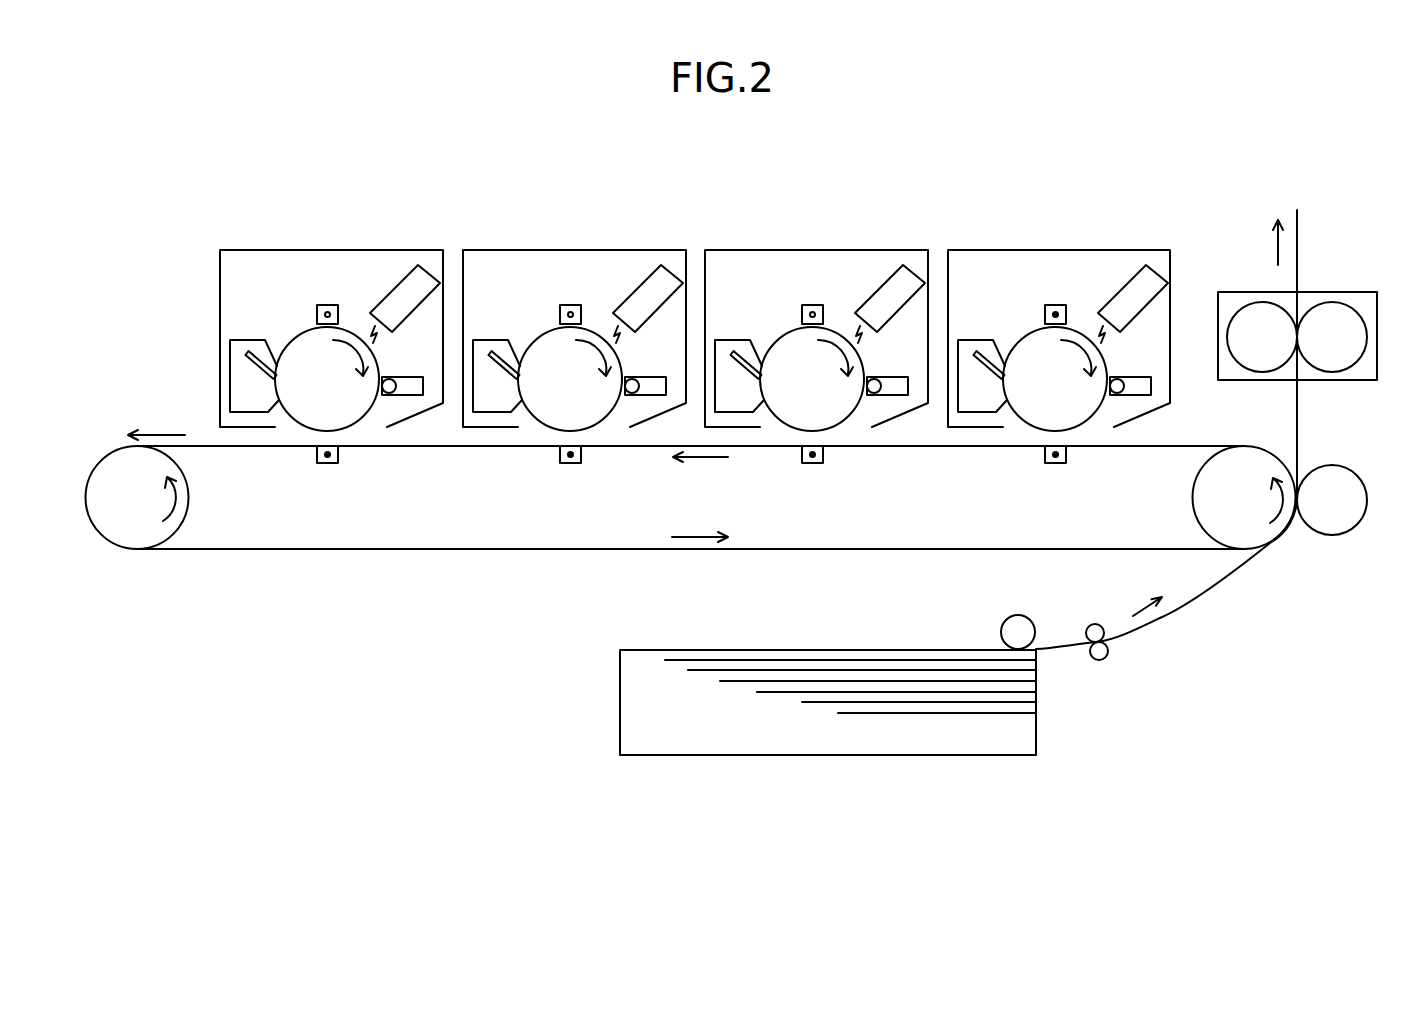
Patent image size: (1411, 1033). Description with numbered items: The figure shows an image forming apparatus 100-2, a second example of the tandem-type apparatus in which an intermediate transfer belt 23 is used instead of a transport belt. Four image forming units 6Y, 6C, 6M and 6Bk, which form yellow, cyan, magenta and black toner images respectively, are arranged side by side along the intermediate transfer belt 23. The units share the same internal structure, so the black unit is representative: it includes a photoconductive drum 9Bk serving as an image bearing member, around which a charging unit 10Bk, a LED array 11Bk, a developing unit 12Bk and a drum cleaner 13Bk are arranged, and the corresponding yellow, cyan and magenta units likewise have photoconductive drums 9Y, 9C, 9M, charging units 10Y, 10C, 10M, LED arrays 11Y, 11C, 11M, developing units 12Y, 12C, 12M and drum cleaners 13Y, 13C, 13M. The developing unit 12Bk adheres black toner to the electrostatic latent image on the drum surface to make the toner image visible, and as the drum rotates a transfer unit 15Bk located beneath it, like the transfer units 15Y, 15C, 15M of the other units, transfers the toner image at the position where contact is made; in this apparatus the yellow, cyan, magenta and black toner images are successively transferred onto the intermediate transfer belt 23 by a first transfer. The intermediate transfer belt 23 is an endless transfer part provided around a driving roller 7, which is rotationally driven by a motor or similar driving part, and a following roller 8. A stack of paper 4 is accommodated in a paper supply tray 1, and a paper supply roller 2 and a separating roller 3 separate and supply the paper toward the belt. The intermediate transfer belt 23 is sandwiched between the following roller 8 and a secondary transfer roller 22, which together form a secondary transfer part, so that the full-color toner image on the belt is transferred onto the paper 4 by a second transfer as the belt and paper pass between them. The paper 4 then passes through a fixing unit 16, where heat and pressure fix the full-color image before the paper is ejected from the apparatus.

The image forming apparatus 100-2 is at (121, 279).
The image forming unit 6Bk is at (331, 338).
The image forming unit 6M is at (574, 338).
The image forming unit 6C is at (816, 338).
The image forming unit 6Y is at (1059, 338).
The photoconductive drum 9Bk is at (335, 431).
The photoconductive drum 9M is at (578, 431).
The photoconductive drum 9C is at (820, 431).
The photoconductive drum 9Y is at (1065, 431).
The charging unit 10Bk is at (318, 305).
The charging unit 10M is at (562, 305).
The charging unit 10C is at (803, 305).
The charging unit 10Y is at (1045, 305).
The LED array 11Bk is at (398, 285).
The LED array 11M is at (641, 285).
The LED array 11C is at (881, 286).
The LED array 11Y is at (1122, 286).
The developing unit 12Bk is at (410, 377).
The developing unit 12M is at (655, 377).
The developing unit 12C is at (895, 377).
The developing unit 12Y is at (1137, 377).
The drum cleaner 13Bk is at (233, 340).
The drum cleaner 13M is at (477, 340).
The drum cleaner 13C is at (719, 340).
The drum cleaner 13Y is at (961, 340).
The transfer unit 15Bk is at (334, 464).
The transfer unit 15M is at (577, 464).
The transfer unit 15C is at (819, 464).
The transfer unit 15Y is at (1062, 464).
The intermediate transfer belt 23 is at (457, 550).
The driving roller 7 is at (97, 535).
The following roller 8 is at (1192, 508).
The secondary transfer roller 22 is at (1352, 528).
The fixing unit 16 is at (1338, 292).
The paper supply tray 1 is at (787, 757).
The paper 4 is at (827, 649).
The paper supply roller 2 is at (1005, 617).
The separating roller 3 is at (1103, 657).